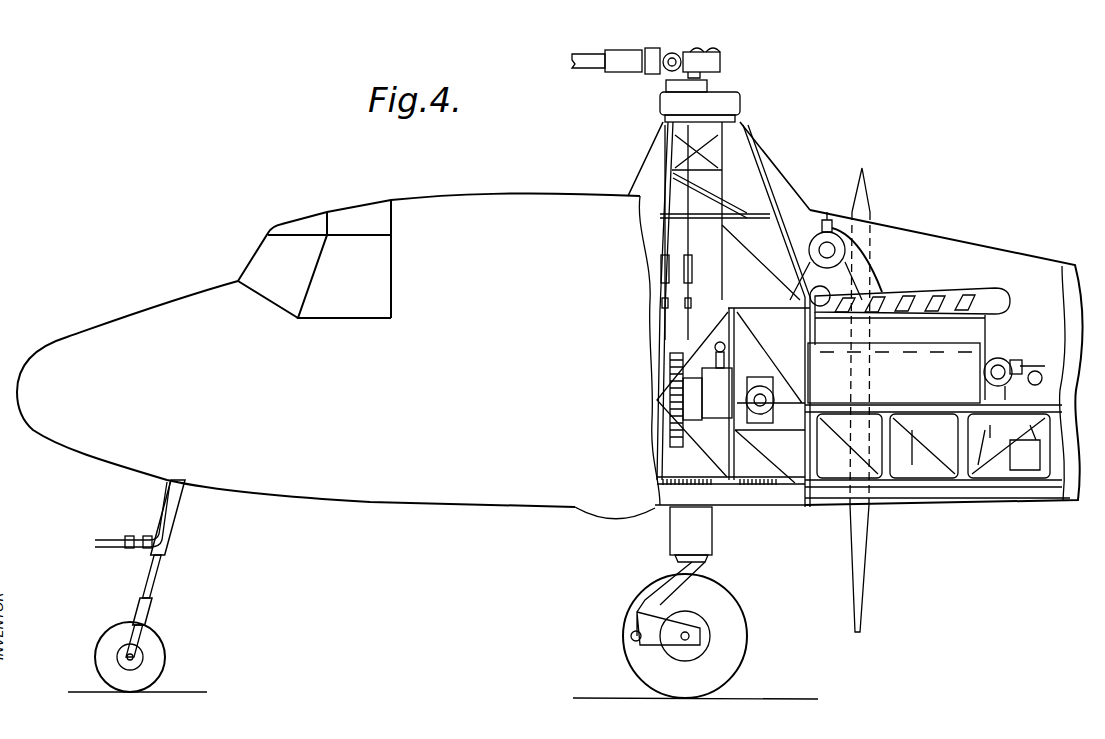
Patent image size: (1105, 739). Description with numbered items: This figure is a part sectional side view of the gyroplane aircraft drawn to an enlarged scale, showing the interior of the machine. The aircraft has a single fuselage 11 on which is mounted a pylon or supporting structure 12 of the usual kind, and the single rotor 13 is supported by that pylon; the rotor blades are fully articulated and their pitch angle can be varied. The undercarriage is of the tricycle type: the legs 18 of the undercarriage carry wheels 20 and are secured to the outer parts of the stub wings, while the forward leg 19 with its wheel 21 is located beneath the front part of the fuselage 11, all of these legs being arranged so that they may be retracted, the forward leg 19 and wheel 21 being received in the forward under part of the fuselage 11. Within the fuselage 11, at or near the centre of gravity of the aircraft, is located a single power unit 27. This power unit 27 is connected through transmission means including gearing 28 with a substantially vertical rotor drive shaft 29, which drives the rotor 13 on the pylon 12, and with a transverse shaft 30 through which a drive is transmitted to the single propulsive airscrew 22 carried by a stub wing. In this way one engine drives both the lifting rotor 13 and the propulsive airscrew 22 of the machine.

The fuselage 11 is at (546, 200).
The pylon 12 is at (722, 170).
The rotor 13 is at (630, 62).
The undercarriage legs 18 is at (700, 538).
The forward leg 19 is at (170, 538).
The wheels 20 is at (727, 610).
The wheel 21 is at (152, 645).
The propulsive airscrew 22 is at (866, 212).
The power unit 27 is at (926, 345).
The gearing 28 is at (700, 405).
The rotor drive shaft 29 is at (742, 216).
The transverse shaft 30 is at (806, 505).